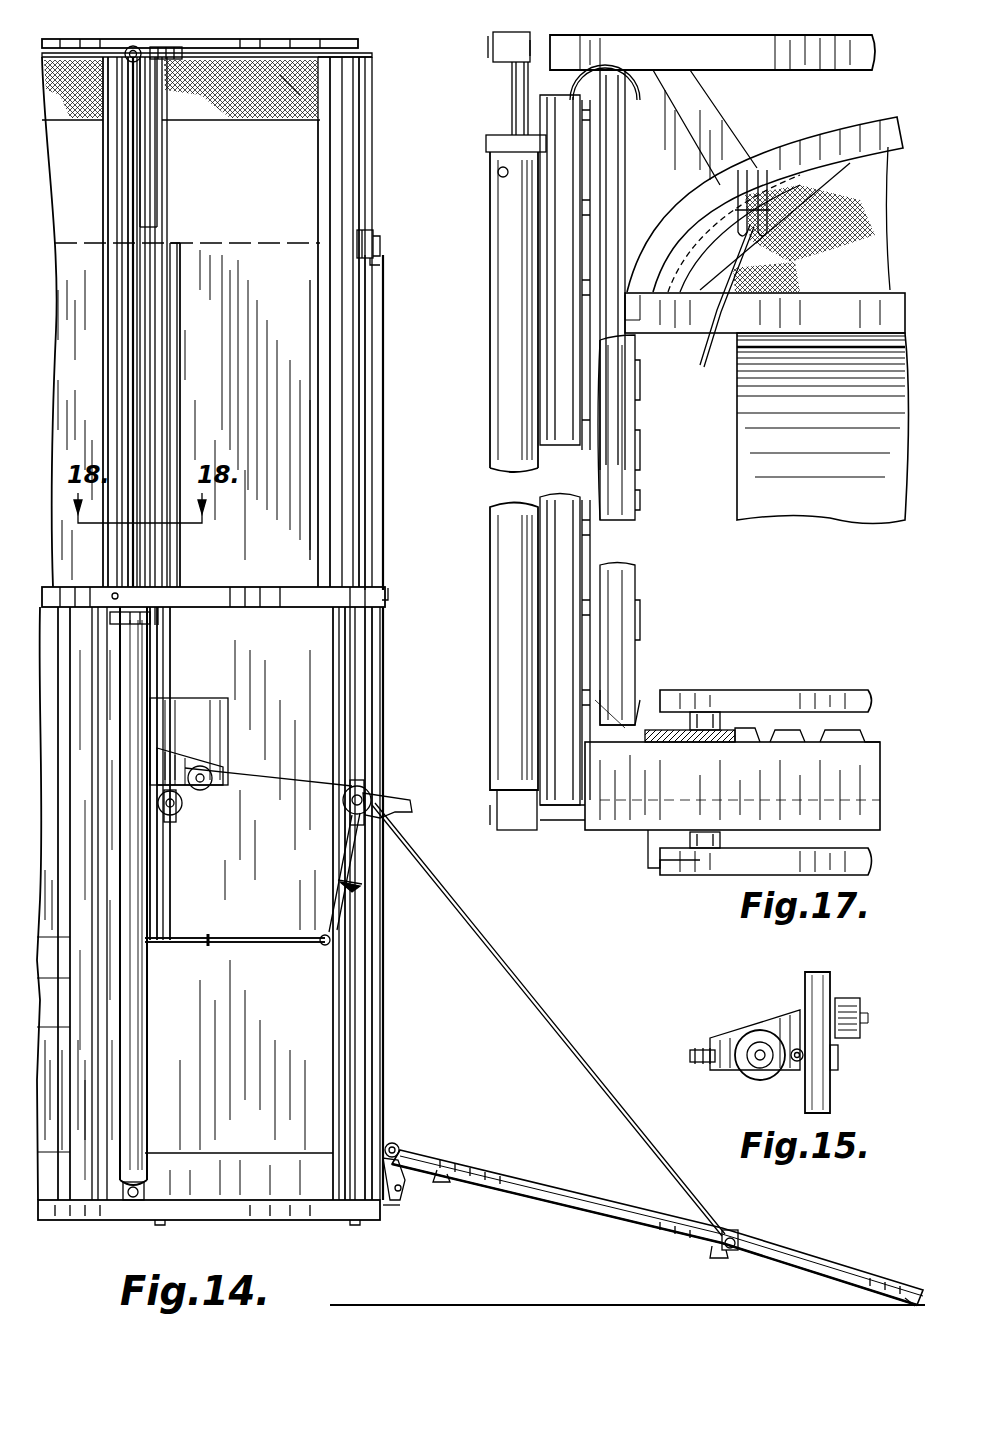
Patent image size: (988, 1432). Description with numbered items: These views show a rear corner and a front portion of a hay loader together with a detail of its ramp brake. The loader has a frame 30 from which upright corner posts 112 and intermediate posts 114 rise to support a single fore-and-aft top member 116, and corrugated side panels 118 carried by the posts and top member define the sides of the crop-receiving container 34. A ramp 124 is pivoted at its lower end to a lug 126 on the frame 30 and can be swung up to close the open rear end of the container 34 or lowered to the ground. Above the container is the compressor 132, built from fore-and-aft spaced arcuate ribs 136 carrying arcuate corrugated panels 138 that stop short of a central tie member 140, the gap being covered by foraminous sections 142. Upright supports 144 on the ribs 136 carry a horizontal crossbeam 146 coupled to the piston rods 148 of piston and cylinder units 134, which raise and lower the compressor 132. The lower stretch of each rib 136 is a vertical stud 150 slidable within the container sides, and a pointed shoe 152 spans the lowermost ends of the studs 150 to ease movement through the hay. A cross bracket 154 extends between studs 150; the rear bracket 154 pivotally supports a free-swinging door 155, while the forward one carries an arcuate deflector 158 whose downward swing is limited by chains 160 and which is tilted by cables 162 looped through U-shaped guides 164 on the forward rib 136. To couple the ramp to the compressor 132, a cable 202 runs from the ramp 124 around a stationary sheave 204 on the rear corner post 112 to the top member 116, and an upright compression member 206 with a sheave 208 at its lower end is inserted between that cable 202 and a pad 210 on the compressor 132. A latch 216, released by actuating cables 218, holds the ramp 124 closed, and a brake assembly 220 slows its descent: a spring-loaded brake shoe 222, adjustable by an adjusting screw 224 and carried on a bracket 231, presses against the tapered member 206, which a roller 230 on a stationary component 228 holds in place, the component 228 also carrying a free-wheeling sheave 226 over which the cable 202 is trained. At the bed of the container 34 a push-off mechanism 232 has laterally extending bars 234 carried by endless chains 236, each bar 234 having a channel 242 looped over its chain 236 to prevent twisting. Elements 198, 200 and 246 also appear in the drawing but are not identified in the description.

In FIG. 14, the frame 30 is at (240, 1222).
In FIG. 17, the frame 30 is at (620, 835).
In FIG. 14, the crop-receiving container 34 is at (386, 640).
In FIG. 17, the crop-receiving container 34 is at (555, 490).
In FIG. 14, the upright corner posts 112 is at (365, 712).
In FIG. 17, the upright corner posts 112 is at (565, 577).
In FIG. 14, the intermediate posts 114 is at (78, 1187).
In FIG. 14, the top member 116 is at (240, 590).
In FIG. 17, the top member 116 is at (566, 95).
In FIG. 14, the corrugated side panels 118 is at (264, 1000).
In FIG. 17, the corrugated side panels 118 is at (593, 546).
In FIG. 14, the ramp 124 is at (785, 1258).
In FIG. 14, the lug 126 is at (400, 1148).
In FIG. 14, the compressor 132 is at (372, 68).
In FIG. 17, the compressor 132 is at (584, 27).
In FIG. 14, the piston and cylinder units 134 is at (148, 1054).
In FIG. 17, the piston and cylinder units 134 is at (487, 375).
In FIG. 14, the arcuate ribs 136 is at (345, 142).
In FIG. 17, the arcuate ribs 136 is at (836, 135).
In FIG. 14, the arcuate corrugated panels 138 is at (296, 385).
In FIG. 17, the arcuate corrugated panels 138 is at (640, 410).
In FIG. 14, the central tie member 140 is at (88, 42).
In FIG. 14, the foraminous sections 142 is at (284, 108).
In FIG. 14, the upright supports 144 is at (147, 135).
In FIG. 17, the upright supports 144 is at (618, 162).
In FIG. 14, the horizontal crossbeam 146 is at (150, 28).
In FIG. 17, the horizontal crossbeam 146 is at (805, 45).
In FIG. 14, the piston rods 148 is at (130, 372).
In FIG. 17, the piston rods 148 is at (510, 108).
In FIG. 17, the vertical stud 150 is at (615, 463).
In FIG. 17, the pointed shoe 152 is at (628, 692).
In FIG. 14, the cross bracket 154 is at (376, 236).
In FIG. 17, the cross bracket 154 is at (905, 300).
In FIG. 14, the free-swinging door 155 is at (380, 310).
In FIG. 17, the arcuate deflector 158 is at (790, 518).
In FIG. 17, the chains 160 is at (804, 238).
In FIG. 17, the cables 162 is at (635, 44).
In FIG. 17, the U-shaped guides 164 is at (735, 200).
In FIG. 14, the fastener 198 is at (112, 592).
In FIG. 14, the left rail 200 is at (103, 160).
In FIG. 14, the cable 202 is at (542, 1025).
In FIG. 14, the stationary sheave 204 is at (350, 796).
In FIG. 14, the compression member 206 is at (172, 633).
In FIG. 15, the compression member 206 is at (808, 980).
In FIG. 14, the sheave 208 is at (178, 818).
In FIG. 14, the pad 210 is at (168, 48).
In FIG. 14, the latch 216 is at (340, 860).
In FIG. 14, the actuating cables 218 is at (180, 937).
In FIG. 14, the brake assembly 220 is at (198, 750).
In FIG. 15, the brake assembly 220 is at (748, 1008).
In FIG. 15, the brake shoe 222 is at (842, 1000).
In FIG. 15, the adjusting screw 224 is at (695, 1050).
In FIG. 14, the free-wheeling sheave 226 is at (206, 793).
In FIG. 15, the free-wheeling sheave 226 is at (745, 1073).
In FIG. 15, the stationary component 228 is at (840, 1066).
In FIG. 15, the roller 230 is at (795, 1062).
In FIG. 14, the brackets 231 is at (195, 760).
In FIG. 15, the brackets 231 is at (795, 1014).
In FIG. 17, the push-off mechanism 232 is at (730, 692).
In FIG. 17, the bars 234 is at (840, 692).
In FIG. 14, the endless chains 236 is at (400, 1198).
In FIG. 17, the endless chains 236 is at (712, 732).
In FIG. 17, the channel 242 is at (702, 712).
In FIG. 17, the spacer plate 246 is at (680, 742).